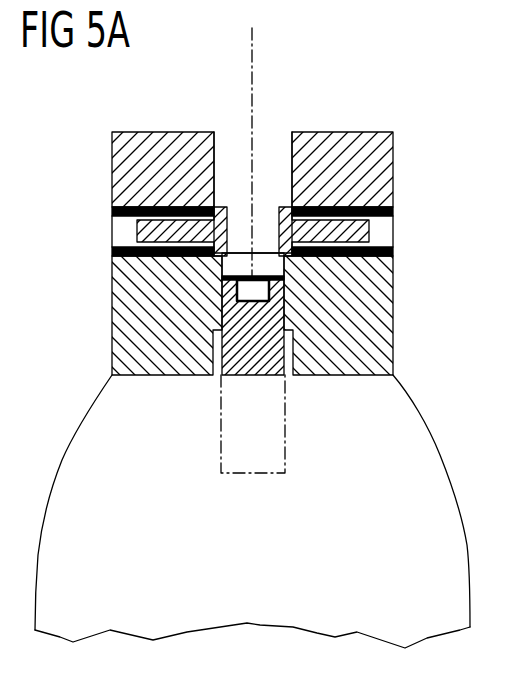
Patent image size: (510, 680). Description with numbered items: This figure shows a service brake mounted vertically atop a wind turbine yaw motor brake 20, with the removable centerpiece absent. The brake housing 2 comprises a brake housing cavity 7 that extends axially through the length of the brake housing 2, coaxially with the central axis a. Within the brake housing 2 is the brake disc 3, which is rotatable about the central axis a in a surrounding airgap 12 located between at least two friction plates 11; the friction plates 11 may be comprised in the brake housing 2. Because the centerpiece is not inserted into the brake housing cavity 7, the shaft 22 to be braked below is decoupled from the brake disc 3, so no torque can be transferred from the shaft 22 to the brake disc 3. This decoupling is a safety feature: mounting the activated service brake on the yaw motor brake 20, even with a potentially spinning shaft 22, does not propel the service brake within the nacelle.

The brake housing 2 is at (128, 172).
The brake disc 3 is at (138, 231).
The brake housing cavity 7 is at (275, 131).
The friction plates 11 is at (132, 257).
The airgap 12 is at (380, 230).
The wind turbine yaw motor brake 20 is at (122, 318).
The shaft to be braked 22 is at (270, 312).
The central axis a is at (251, 77).